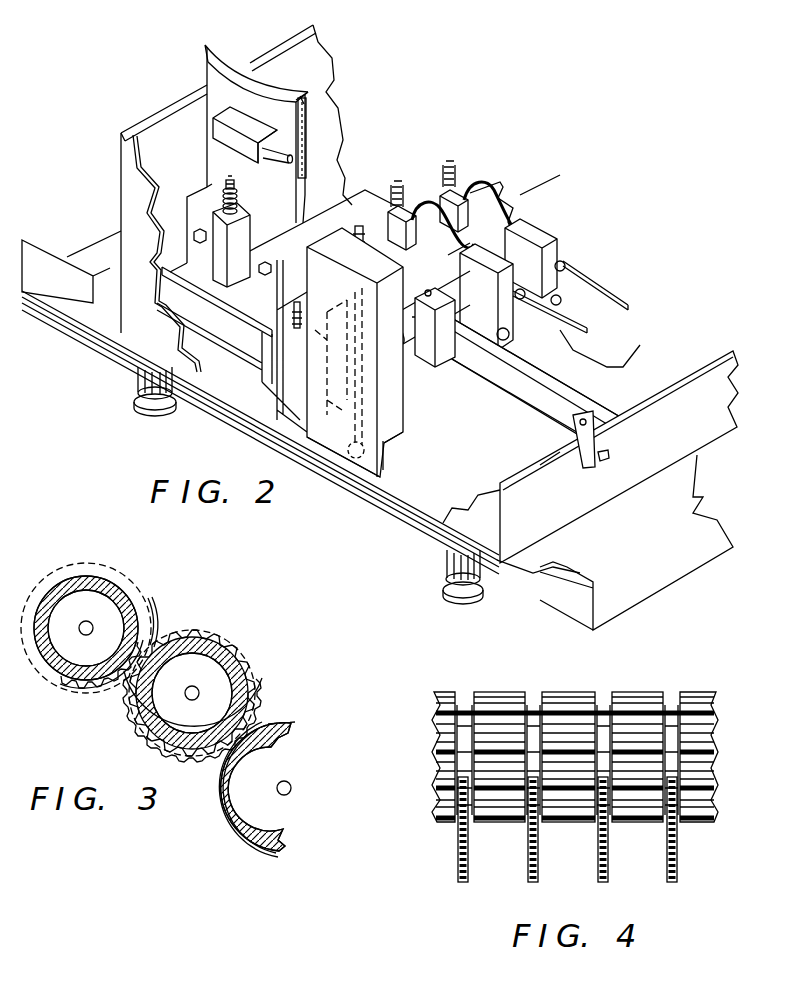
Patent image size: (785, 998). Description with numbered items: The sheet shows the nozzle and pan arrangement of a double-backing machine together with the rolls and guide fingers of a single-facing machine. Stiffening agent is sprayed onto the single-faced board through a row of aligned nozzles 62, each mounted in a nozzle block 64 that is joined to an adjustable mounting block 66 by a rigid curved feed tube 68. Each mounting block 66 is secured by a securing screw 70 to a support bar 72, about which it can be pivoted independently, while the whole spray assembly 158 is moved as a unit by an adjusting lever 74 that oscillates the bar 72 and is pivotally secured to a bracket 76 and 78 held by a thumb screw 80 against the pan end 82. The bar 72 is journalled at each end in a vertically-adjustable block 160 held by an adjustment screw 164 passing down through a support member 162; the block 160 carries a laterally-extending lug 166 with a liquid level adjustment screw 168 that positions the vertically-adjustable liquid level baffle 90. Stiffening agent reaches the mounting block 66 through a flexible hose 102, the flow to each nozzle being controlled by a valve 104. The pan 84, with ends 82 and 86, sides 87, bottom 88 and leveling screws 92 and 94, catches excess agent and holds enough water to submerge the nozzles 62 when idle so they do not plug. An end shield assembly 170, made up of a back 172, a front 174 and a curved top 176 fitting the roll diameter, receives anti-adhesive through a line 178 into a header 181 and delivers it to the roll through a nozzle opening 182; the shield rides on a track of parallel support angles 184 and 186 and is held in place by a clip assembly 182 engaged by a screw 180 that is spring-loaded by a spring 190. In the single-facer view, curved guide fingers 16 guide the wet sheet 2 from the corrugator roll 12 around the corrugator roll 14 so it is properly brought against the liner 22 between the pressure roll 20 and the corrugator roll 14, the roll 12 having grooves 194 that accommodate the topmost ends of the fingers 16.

In FIG. 3, the sheet 2 is at (154, 606).
In FIG. 3, the corrugator roll 12 is at (97, 567).
In FIG. 4, the corrugator roll 12 is at (436, 770).
In FIG. 3, the corrugator roll 14 is at (213, 636).
In FIG. 3, the guide fingers 16 is at (122, 709).
In FIG. 4, the guide fingers 16 is at (468, 855).
In FIG. 3, the pressure roll 20 is at (288, 742).
In FIG. 3, the liner 22 is at (262, 726).
In FIG. 2, the nozzles 62 is at (397, 185).
In FIG. 2, the nozzle block 64 is at (402, 208).
In FIG. 2, the adjustable mounting block 66 is at (540, 236).
In FIG. 2, the rigid curved feed tube 68 is at (487, 186).
In FIG. 2, the securing screw 70 is at (516, 330).
In FIG. 2, the support bar 72 is at (396, 358).
In FIG. 2, the adjusting lever 74 is at (634, 442).
In FIG. 2, the bracket 76 is at (580, 448).
In FIG. 2, the bracket 78 is at (578, 425).
In FIG. 2, the thumb screw 80 is at (608, 460).
In FIG. 2, the pan end 82 is at (598, 503).
In FIG. 2, the pan 84 is at (116, 193).
In FIG. 2, the pan end 86 is at (172, 118).
In FIG. 2, the sides 87 is at (125, 262).
In FIG. 2, the bottom 88 is at (402, 500).
In FIG. 2, the liquid level baffle 90 is at (513, 198).
In FIG. 2, the leveling screw 92 is at (156, 410).
In FIG. 2, the leveling screw 94 is at (478, 598).
In FIG. 2, the flexible hose 102 is at (615, 302).
In FIG. 2, the valve 104 is at (570, 272).
In FIG. 2, the spray assembly 158 is at (426, 366).
In FIG. 2, the vertically-adjustable block 160 is at (374, 352).
In FIG. 2, the support member 162 is at (388, 457).
In FIG. 2, the adjustment screw 164 is at (358, 226).
In FIG. 2, the laterally-extending lug 166 is at (318, 406).
In FIG. 2, the liquid level adjustment screw 168 is at (304, 316).
In FIG. 2, the end shield assembly 170 is at (237, 154).
In FIG. 2, the back 172 is at (306, 126).
In FIG. 2, the front 174 is at (302, 172).
In FIG. 2, the curved top 176 is at (274, 90).
In FIG. 2, the line 178 is at (268, 150).
In FIG. 2, the screw 180 is at (228, 186).
In FIG. 2, the header 181 is at (262, 140).
In FIG. 2, the nozzle opening 182 is at (334, 99).
In FIG. 2, the support angle 184 is at (150, 257).
In FIG. 2, the support angle 186 is at (262, 357).
In FIG. 2, the spring 190 is at (238, 200).
In FIG. 4, the grooves 194 is at (463, 695).